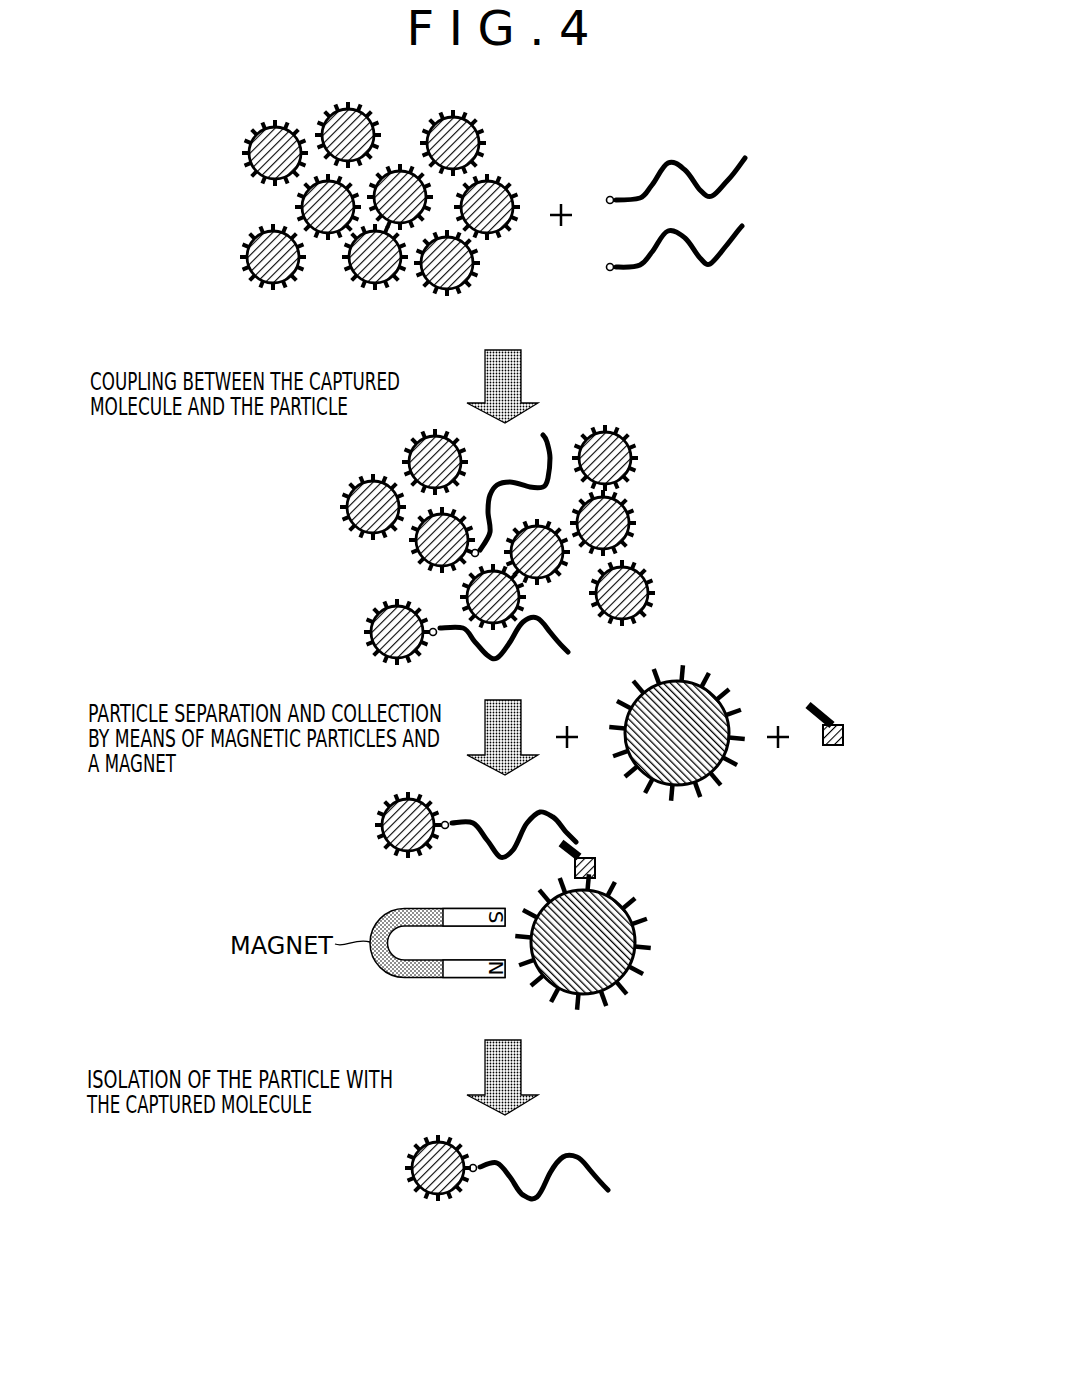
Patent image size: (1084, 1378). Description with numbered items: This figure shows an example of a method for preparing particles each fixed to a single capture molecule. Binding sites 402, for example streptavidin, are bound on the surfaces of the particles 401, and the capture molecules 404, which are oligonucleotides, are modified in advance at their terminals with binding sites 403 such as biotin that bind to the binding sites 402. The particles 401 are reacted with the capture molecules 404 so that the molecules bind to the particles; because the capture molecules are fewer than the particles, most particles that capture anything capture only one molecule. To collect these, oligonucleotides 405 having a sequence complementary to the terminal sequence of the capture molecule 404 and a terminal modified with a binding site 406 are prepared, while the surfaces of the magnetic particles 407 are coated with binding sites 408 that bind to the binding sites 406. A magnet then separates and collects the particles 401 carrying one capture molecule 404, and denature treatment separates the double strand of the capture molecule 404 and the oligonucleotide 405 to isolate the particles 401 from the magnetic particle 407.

The particle 401 is at (270, 282).
The binding site 402 is at (427, 292).
The binding site 403 is at (612, 272).
The capture molecule 404 is at (682, 162).
The oligonucleotide 405 is at (831, 711).
The binding site 406 is at (843, 744).
The magnetic particle 407 is at (713, 760).
The binding site 408 is at (650, 788).